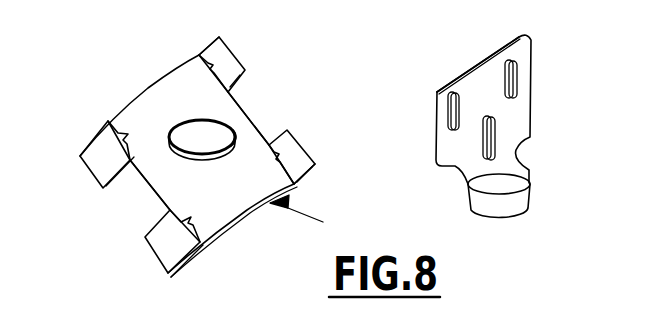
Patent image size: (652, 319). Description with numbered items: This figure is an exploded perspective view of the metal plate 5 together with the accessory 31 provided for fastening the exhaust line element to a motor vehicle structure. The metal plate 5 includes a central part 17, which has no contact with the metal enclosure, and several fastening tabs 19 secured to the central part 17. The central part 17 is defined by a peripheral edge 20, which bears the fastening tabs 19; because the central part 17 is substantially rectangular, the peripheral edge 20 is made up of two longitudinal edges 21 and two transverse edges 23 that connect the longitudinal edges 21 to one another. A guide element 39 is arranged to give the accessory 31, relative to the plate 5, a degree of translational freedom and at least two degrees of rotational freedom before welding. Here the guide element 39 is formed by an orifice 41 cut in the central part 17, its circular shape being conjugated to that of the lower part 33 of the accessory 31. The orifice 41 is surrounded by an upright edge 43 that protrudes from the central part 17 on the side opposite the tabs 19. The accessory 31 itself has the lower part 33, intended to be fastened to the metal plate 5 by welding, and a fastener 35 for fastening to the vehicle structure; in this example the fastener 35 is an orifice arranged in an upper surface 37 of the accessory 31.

The metal plate 5 is at (108, 79).
The central part 17 is at (213, 200).
The fastening tabs 19 is at (237, 69).
The peripheral edge 20 is at (272, 203).
The longitudinal edges 21 is at (244, 112).
The transverse edges 23 is at (148, 88).
The accessory 31 is at (568, 74).
The lower part 33 is at (488, 205).
The fastener 35 is at (507, 83).
The upper surface 37 is at (470, 82).
The guide element 39 is at (253, 137).
The orifice 41 is at (202, 130).
The upright edge 43 is at (170, 162).